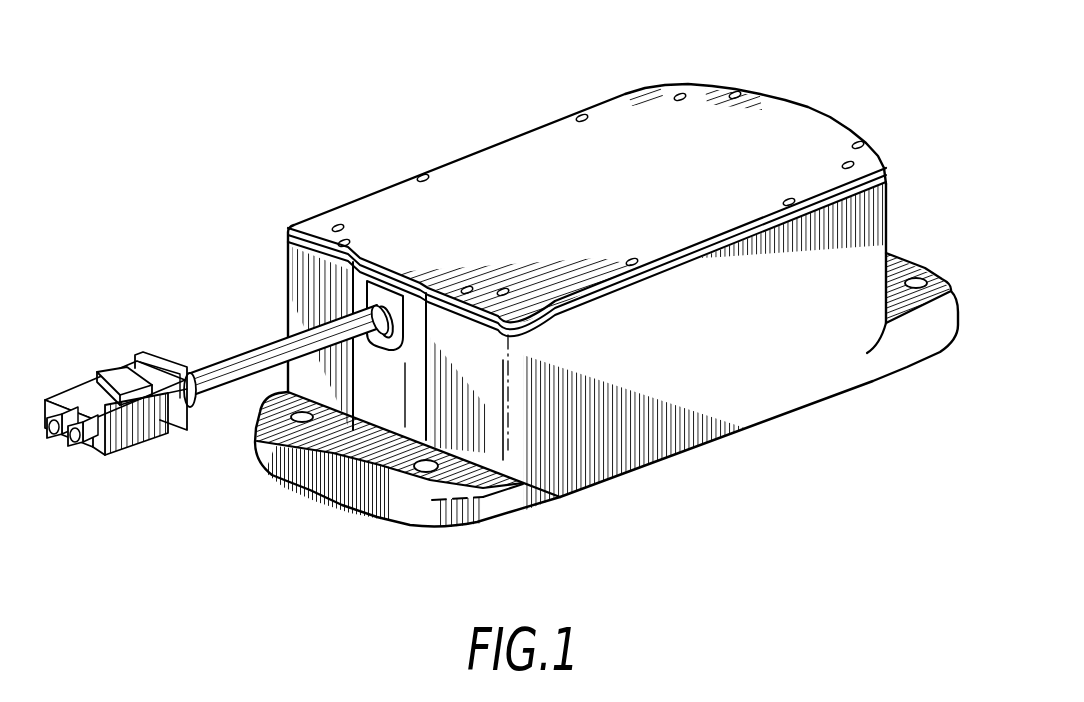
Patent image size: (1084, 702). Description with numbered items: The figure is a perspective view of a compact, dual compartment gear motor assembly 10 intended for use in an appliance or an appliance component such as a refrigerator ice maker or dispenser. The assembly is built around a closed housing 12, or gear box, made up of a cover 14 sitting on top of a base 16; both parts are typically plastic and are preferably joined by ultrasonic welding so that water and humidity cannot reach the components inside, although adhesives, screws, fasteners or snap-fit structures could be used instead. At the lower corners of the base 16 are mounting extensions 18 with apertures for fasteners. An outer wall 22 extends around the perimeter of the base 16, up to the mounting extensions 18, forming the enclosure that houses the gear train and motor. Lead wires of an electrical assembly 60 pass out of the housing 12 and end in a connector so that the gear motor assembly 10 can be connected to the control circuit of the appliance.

The compact, dual compartment gear motor assembly 10 is at (501, 308).
The housing 12 is at (387, 207).
The cover 14 is at (587, 213).
The base 16 is at (768, 425).
The mounting extensions 18 is at (337, 485).
The outer wall 22 is at (658, 346).
The electrical assembly 60 is at (118, 356).